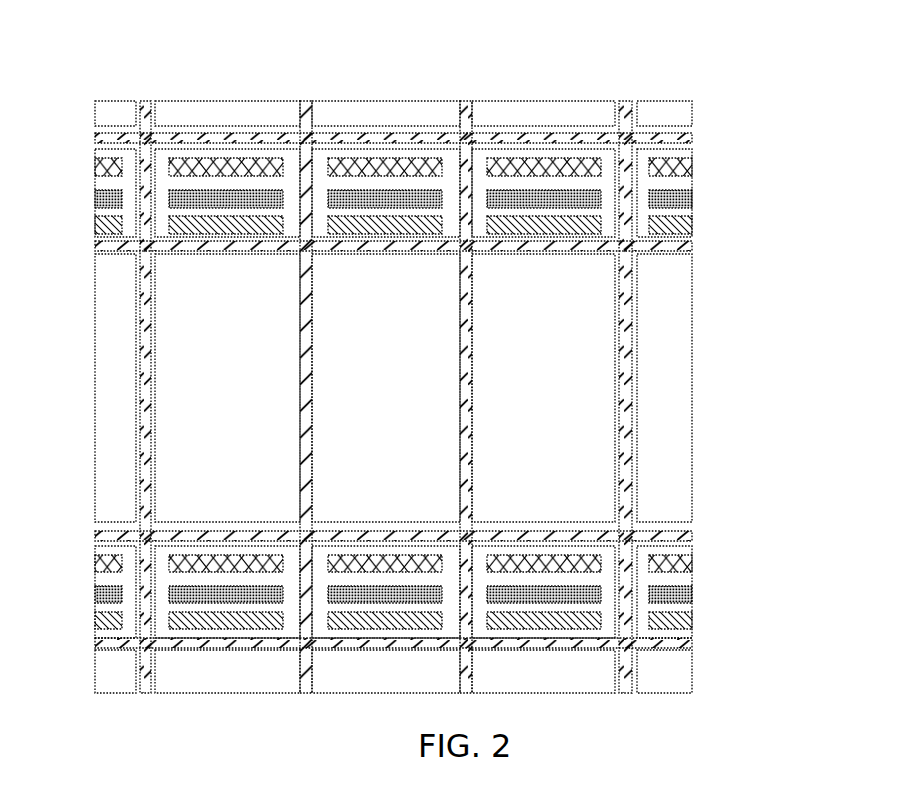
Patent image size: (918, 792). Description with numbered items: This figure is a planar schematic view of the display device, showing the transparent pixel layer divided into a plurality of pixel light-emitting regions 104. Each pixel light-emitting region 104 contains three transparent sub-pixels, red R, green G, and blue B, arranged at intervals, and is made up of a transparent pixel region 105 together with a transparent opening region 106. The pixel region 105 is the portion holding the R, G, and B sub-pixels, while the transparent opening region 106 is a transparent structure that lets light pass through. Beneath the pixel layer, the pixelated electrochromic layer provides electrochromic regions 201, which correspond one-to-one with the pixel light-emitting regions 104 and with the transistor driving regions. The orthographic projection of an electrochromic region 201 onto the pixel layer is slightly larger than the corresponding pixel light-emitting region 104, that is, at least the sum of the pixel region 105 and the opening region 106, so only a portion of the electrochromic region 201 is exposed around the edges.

The red transparent sub-pixel R is at (193, 158).
The green transparent sub-pixel G is at (229, 190).
The blue transparent sub-pixel B is at (263, 216).
The pixel light-emitting region 104 is at (480, 346).
The transparent pixel region 105 is at (434, 346).
The transparent opening region 106 is at (431, 390).
The electrochromic region 201 is at (193, 528).